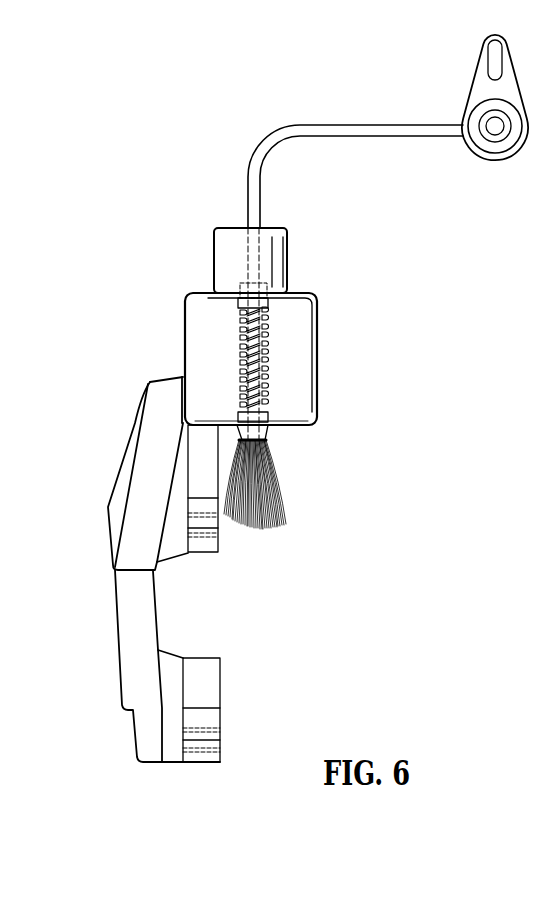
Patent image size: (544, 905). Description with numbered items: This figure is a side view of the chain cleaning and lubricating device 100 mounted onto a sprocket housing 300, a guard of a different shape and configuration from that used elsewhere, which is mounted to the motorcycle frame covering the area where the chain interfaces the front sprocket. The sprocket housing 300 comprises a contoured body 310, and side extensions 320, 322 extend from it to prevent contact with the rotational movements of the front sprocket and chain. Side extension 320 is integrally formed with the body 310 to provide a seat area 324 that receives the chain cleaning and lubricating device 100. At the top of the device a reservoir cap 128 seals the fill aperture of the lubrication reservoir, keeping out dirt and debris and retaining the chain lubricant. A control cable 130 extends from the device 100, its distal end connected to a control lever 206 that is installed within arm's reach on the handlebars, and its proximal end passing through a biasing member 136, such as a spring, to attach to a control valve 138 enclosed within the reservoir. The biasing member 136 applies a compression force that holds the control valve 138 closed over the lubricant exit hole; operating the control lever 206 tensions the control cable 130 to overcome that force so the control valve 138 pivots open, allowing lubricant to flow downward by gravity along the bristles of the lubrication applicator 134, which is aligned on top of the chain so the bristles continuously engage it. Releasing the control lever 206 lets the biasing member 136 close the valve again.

The chain cleaning and lubricating device 100 is at (336, 281).
The reservoir cap 128 is at (213, 257).
The control cable 130 is at (262, 147).
The lubrication applicator 134 is at (270, 468).
The biasing member 136 is at (263, 353).
The control valve 138 is at (268, 417).
The control lever 206 is at (472, 86).
The sprocket housing 300 is at (105, 546).
The contoured body 310 is at (147, 457).
The side extension 320 is at (202, 543).
The side extension 322 is at (207, 692).
The seat area 324 is at (180, 389).